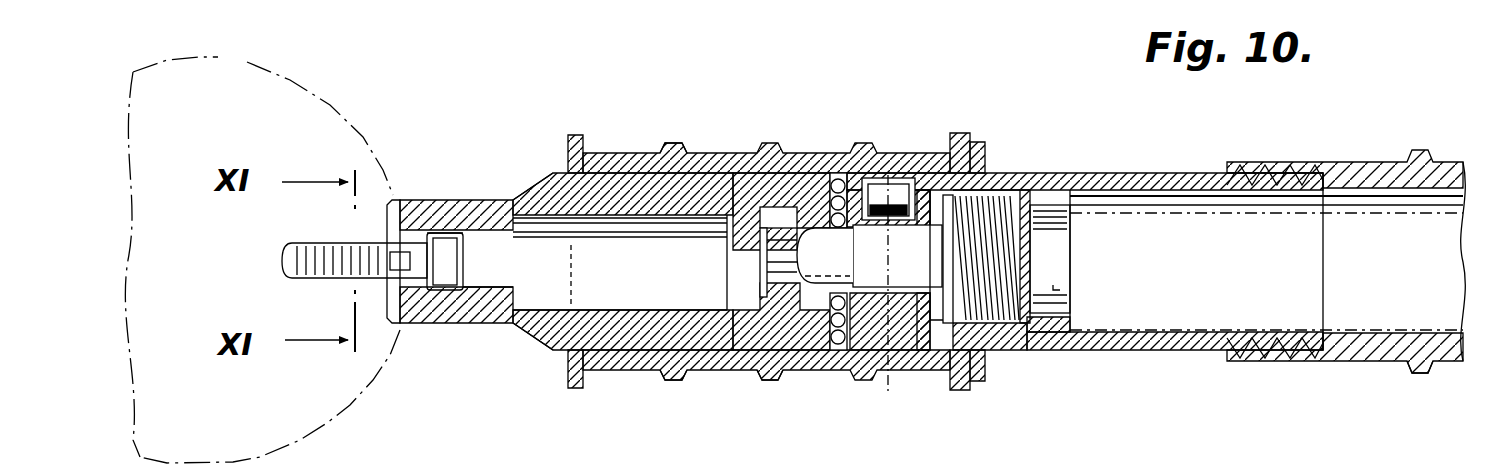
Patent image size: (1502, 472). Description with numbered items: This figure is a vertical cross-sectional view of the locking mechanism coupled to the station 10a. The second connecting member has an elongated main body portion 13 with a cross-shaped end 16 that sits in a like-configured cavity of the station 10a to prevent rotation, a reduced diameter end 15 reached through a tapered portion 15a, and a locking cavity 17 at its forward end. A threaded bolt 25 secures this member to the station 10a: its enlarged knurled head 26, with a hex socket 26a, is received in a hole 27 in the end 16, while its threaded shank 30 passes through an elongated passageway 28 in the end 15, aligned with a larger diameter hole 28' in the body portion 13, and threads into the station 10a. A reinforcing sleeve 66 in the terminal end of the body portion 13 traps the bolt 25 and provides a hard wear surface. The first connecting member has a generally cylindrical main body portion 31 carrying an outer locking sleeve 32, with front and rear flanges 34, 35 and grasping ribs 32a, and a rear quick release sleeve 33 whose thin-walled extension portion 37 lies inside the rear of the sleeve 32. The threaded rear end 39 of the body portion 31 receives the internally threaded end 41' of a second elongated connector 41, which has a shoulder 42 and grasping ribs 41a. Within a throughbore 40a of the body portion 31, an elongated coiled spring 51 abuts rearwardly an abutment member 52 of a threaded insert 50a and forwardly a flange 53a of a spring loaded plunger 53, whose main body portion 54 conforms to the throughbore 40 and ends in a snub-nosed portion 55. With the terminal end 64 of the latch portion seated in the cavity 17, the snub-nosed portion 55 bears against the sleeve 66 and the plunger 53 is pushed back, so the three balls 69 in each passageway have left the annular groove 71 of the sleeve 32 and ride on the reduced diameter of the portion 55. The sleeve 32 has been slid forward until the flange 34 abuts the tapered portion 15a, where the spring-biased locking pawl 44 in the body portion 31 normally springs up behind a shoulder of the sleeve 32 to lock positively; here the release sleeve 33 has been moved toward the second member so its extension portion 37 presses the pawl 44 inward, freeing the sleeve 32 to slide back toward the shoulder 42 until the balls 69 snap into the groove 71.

The station 10a is at (1109, 459).
The main body portion 13 is at (632, 190).
The reduced diameter end 15 is at (456, 231).
The tapered portion 15a is at (553, 184).
The cross-shaped end 16 is at (393, 196).
The locking cavity 17 is at (722, 352).
The threaded bolt 25 is at (270, 279).
The enlarged knurled head 26 is at (440, 233).
The hex socket 26a is at (470, 257).
The hole 27 is at (433, 290).
The elongated passageway 28 is at (489, 347).
The larger diameter hole 28' is at (676, 387).
The threaded shank 30 is at (282, 262).
The main body portion 31 is at (862, 352).
The locking sleeve 32 is at (726, 153).
The elongated ribs 32a is at (670, 143).
The quick release sleeve 33 is at (1000, 150).
The front flange 34 is at (571, 135).
The rear flange 35 is at (965, 135).
The thin-walled extension portion 37 is at (926, 173).
The rear end 39 is at (1283, 352).
The throughbore 40 is at (898, 352).
The throughbore 40a is at (1008, 352).
The second elongated connector 41 is at (1346, 213).
The internally threaded end 41' is at (1250, 137).
The elongated ribs 41a is at (1425, 373).
The shoulder 42 is at (1215, 178).
The locking pawl 44 is at (890, 178).
The threaded insert 50a is at (1067, 338).
The elongated coiled spring 51 is at (995, 240).
The abutment member 52 is at (1060, 285).
The spring loaded plunger 53 is at (917, 352).
The flange 53a is at (1010, 185).
The main body portion 54 is at (936, 262).
The snub-nosed portion 55 is at (760, 278).
The terminal end 64 is at (727, 294).
The reinforcing sleeve 66 is at (772, 352).
The balls 69 is at (834, 176).
The annular groove 71 is at (615, 352).